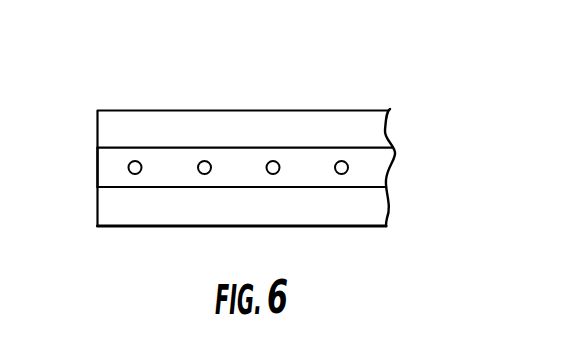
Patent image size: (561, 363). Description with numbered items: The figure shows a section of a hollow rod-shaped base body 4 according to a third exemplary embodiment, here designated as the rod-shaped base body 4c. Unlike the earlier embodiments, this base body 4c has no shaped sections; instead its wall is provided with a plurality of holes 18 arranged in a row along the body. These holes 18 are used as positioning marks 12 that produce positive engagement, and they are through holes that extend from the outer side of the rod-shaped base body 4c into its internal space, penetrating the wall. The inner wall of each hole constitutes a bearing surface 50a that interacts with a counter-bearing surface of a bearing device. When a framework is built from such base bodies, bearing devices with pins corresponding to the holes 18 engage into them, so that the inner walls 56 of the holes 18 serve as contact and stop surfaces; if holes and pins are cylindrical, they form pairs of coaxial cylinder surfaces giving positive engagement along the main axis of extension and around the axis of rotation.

The rod-shaped base body 4 is at (397, 79).
The rod-shaped base body 4c is at (97, 167).
The positioning marks 12 is at (362, 162).
The holes 18 is at (203, 166).
The inner walls 56 is at (203, 166).
The bearing surface 50a is at (118, 175).